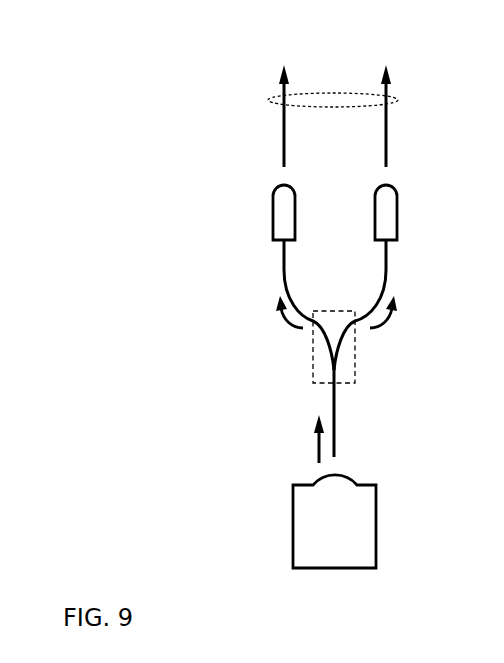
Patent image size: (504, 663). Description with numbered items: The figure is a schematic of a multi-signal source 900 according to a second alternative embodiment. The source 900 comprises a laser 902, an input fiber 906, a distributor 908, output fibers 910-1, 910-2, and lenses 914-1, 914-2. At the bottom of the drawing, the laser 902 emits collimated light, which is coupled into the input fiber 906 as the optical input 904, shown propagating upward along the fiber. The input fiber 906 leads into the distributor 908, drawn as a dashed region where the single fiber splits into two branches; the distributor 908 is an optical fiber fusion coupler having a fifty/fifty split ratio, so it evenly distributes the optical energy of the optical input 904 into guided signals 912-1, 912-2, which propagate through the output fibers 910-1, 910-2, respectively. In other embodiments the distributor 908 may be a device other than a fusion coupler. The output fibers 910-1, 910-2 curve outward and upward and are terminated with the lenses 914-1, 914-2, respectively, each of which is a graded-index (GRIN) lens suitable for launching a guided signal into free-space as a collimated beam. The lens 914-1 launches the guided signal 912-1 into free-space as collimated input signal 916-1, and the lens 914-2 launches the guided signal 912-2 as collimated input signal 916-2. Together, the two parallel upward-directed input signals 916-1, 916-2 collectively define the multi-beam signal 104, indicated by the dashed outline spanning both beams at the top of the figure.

The source 900 is at (113, 107).
The laser 902 is at (293, 527).
The optical input 904 is at (293, 439).
The input fiber 906 is at (336, 425).
The distributor 908 is at (357, 362).
The output fiber 910-1 is at (283, 262).
The output fiber 910-2 is at (387, 262).
The guided signal 912-1 is at (284, 320).
The guided signal 912-2 is at (386, 320).
The lens 914-1 is at (273, 218).
The lens 914-2 is at (397, 217).
The collimated input signal 916-1 is at (283, 156).
The collimated input signal 916-2 is at (386, 157).
The multi-beam signal 104 is at (398, 100).